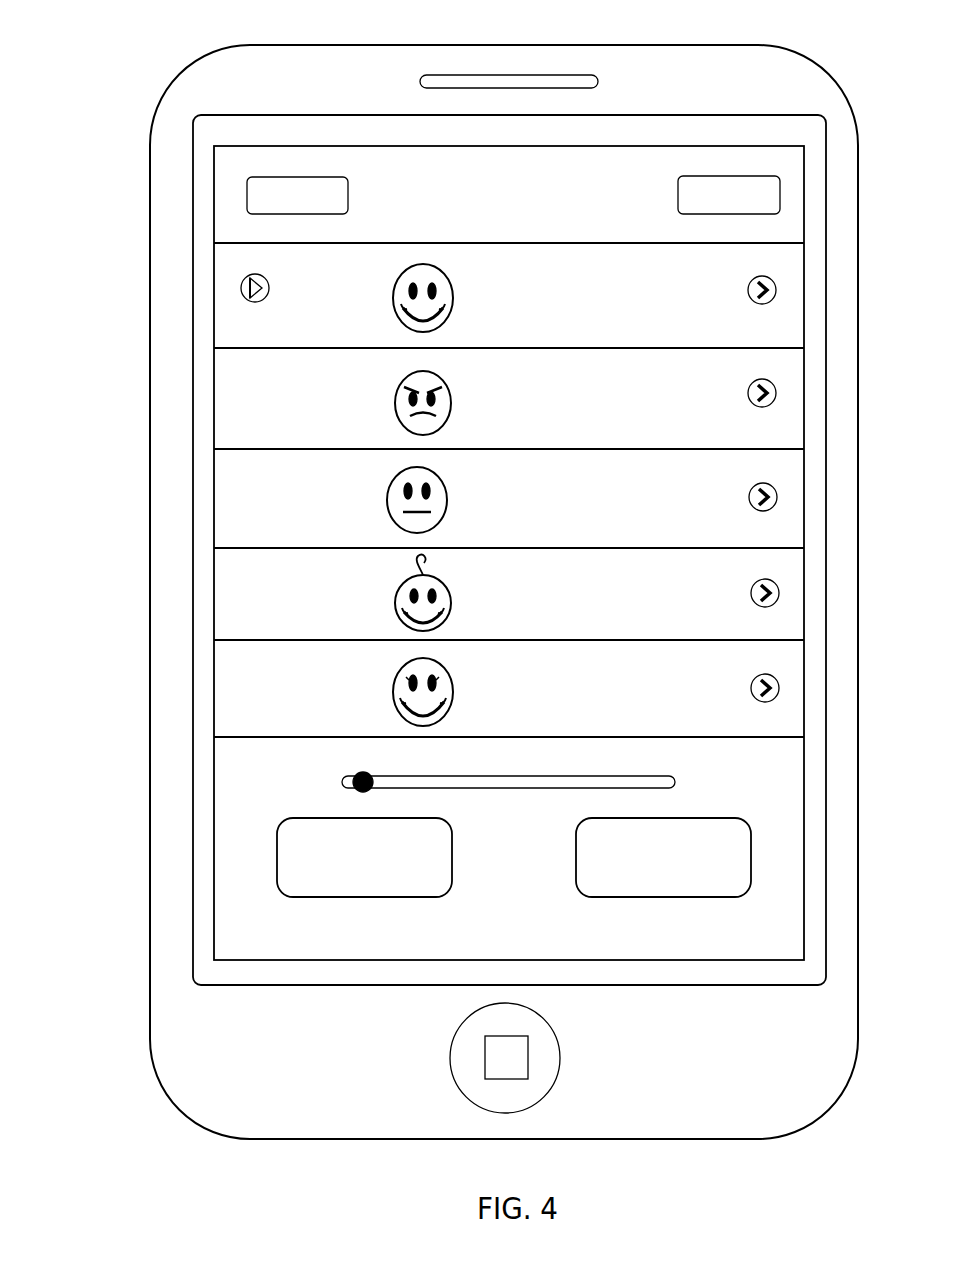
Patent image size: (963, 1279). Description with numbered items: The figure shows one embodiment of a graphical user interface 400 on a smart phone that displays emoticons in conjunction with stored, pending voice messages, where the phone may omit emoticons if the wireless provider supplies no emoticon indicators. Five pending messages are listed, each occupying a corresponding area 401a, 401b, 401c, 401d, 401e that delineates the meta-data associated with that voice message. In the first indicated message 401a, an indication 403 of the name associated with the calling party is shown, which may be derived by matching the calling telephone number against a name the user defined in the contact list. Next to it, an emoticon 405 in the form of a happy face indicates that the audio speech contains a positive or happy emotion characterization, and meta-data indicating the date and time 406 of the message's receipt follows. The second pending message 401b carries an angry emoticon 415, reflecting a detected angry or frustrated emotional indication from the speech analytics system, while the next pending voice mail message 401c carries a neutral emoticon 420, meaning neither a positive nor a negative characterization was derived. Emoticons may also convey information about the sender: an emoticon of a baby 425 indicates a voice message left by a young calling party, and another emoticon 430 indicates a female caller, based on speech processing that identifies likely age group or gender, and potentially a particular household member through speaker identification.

The graphical user interface 400 is at (108, 36).
The first pending message area 401a is at (228, 304).
The second pending message area 401b is at (228, 404).
The third pending message area 401c is at (230, 482).
The fourth pending message area 401d is at (230, 573).
The fifth pending message area 401e is at (230, 680).
The indication of calling party name 403 is at (307, 273).
The happy face emoticon 405 is at (448, 296).
The date and time 406 is at (623, 278).
The angry emoticon 415 is at (448, 400).
The neutral emoticon 420 is at (446, 497).
The baby emoticon 425 is at (448, 598).
The female caller emoticon 430 is at (452, 695).